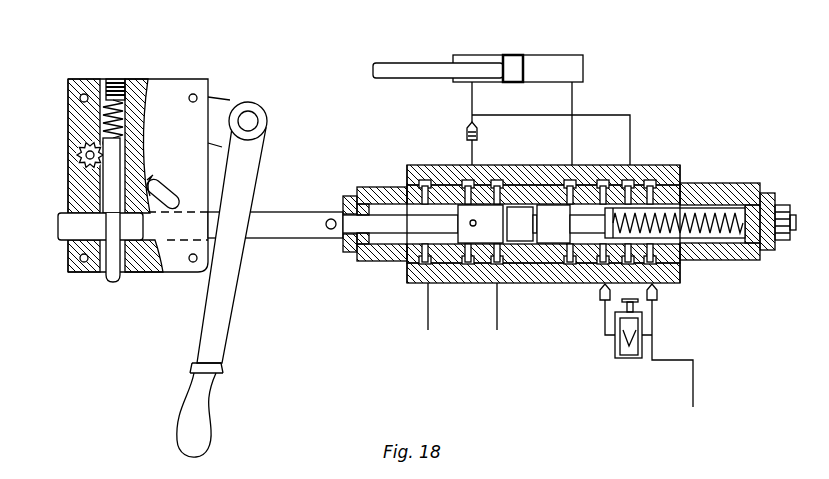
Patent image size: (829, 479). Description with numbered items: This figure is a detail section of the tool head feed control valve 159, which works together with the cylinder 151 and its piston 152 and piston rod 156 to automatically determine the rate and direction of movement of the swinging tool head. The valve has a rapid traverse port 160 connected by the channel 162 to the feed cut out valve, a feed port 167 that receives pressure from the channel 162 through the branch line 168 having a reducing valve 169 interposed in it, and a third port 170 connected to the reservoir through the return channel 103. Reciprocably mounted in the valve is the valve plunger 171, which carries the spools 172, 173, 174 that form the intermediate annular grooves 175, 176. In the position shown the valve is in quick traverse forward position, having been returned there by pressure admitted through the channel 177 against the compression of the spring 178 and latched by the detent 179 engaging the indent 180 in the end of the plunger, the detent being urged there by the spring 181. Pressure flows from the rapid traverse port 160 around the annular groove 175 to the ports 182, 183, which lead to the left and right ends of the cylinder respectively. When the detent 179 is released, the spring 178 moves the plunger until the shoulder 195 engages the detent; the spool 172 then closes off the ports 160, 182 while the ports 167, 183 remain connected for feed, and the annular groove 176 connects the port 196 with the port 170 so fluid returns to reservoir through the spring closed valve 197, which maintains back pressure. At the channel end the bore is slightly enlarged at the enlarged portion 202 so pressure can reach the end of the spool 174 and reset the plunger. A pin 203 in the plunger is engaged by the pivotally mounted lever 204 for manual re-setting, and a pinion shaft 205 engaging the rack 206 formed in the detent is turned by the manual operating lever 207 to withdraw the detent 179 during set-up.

The return channel 103 is at (497, 318).
The cylinder 151 is at (555, 52).
The piston 152 is at (507, 55).
The piston rod 156 is at (393, 68).
The feed control valve 159 is at (660, 163).
The rapid traverse port 160 is at (670, 283).
The channel 162 is at (695, 391).
The feed port 167 is at (598, 286).
The branch line 168 is at (605, 320).
The reducing valve 169 is at (618, 360).
The third port 170 is at (508, 283).
The valve plunger 171 is at (352, 220).
The spool 172 is at (695, 185).
The spool 173 is at (560, 170).
The spool 174 is at (515, 186).
The annular groove 175 is at (603, 164).
The annular groove 176 is at (528, 165).
The channel 177 is at (429, 306).
The spring 178 is at (645, 165).
The detent 179 is at (112, 281).
The indent 180 is at (137, 274).
The spring 181 is at (148, 80).
The port 182 is at (625, 164).
The port 183 is at (556, 165).
The shoulder 195 is at (148, 210).
The port 196 is at (455, 165).
The spring closed valve 197 is at (467, 128).
The enlarged portion 202 is at (393, 187).
The pin 203 is at (328, 232).
The lever 204 is at (222, 312).
The pinion shaft 205 is at (70, 134).
The rack 206 is at (70, 102).
The manual operating lever 207 is at (148, 178).